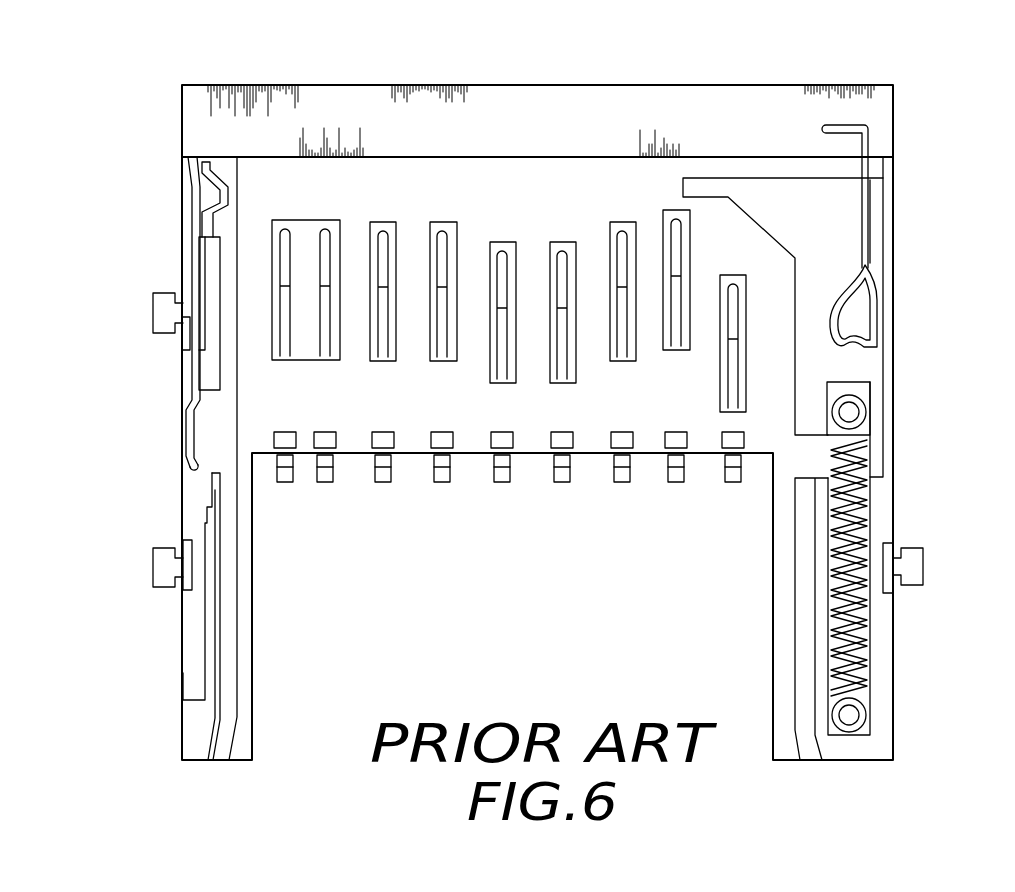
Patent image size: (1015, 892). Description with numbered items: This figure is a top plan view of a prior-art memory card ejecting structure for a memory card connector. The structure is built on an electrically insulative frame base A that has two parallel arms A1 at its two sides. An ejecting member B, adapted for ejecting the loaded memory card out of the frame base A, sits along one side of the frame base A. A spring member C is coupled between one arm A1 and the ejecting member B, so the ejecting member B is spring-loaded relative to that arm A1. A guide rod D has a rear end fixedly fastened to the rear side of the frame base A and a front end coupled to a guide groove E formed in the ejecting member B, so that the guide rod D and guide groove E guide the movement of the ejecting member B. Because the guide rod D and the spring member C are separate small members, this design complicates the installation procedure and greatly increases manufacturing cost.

The frame base A is at (166, 91).
The arm A1 is at (866, 746).
The ejecting member B is at (860, 362).
The spring member C is at (862, 636).
The guide rod D is at (862, 167).
The guide groove E is at (877, 310).